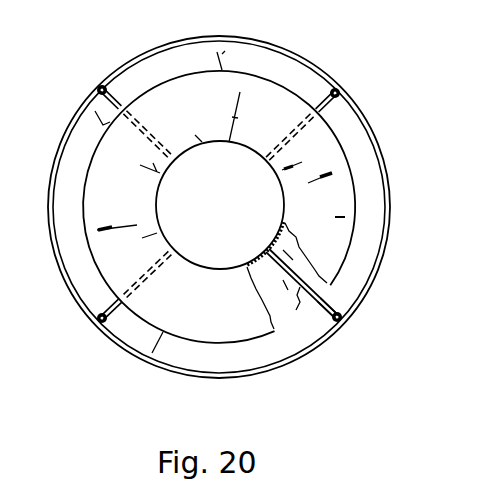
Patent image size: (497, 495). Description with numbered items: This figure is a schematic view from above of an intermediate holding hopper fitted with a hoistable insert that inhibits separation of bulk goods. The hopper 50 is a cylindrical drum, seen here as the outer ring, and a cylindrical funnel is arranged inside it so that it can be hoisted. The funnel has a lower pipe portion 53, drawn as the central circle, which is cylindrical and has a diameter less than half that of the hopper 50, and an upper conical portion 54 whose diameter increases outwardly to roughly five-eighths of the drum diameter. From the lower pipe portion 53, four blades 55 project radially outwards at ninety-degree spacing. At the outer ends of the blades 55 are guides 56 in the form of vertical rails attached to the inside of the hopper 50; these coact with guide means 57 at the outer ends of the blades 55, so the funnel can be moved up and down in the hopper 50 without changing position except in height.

The hopper 50 is at (355, 98).
The lower pipe portion 53 is at (160, 184).
The upper conical portion 54 is at (262, 98).
The blades 55 is at (127, 102).
The guides 56 is at (99, 88).
The guide means 57 is at (112, 91).